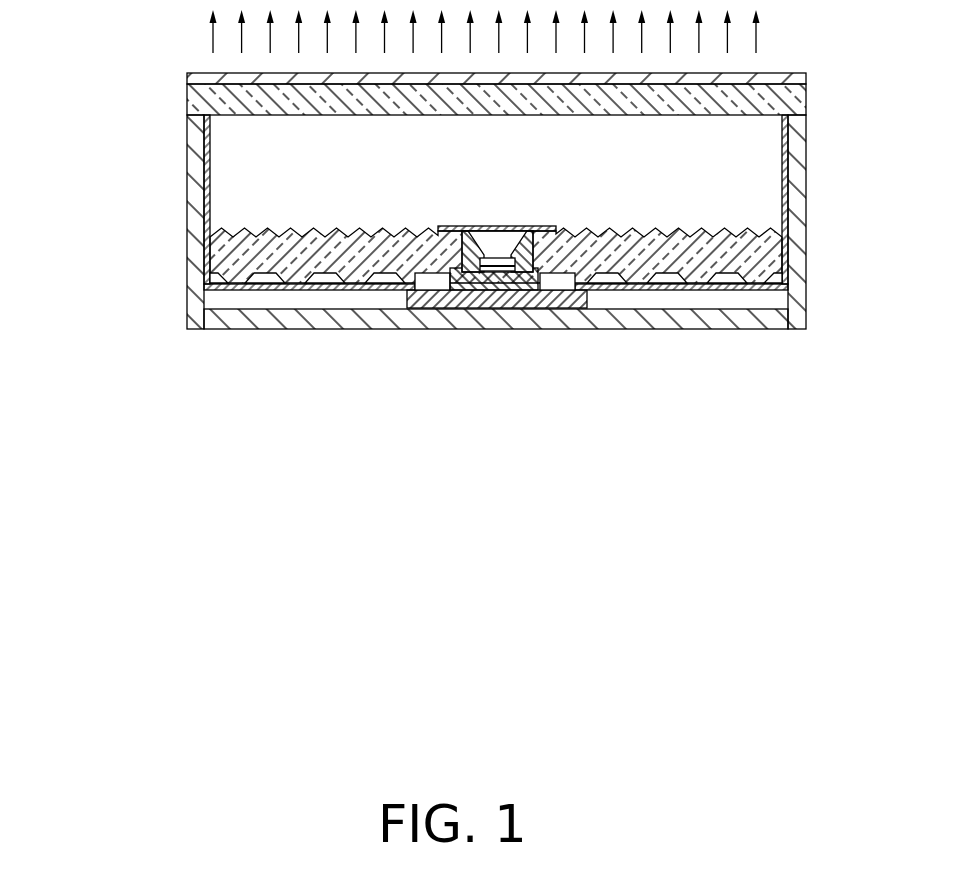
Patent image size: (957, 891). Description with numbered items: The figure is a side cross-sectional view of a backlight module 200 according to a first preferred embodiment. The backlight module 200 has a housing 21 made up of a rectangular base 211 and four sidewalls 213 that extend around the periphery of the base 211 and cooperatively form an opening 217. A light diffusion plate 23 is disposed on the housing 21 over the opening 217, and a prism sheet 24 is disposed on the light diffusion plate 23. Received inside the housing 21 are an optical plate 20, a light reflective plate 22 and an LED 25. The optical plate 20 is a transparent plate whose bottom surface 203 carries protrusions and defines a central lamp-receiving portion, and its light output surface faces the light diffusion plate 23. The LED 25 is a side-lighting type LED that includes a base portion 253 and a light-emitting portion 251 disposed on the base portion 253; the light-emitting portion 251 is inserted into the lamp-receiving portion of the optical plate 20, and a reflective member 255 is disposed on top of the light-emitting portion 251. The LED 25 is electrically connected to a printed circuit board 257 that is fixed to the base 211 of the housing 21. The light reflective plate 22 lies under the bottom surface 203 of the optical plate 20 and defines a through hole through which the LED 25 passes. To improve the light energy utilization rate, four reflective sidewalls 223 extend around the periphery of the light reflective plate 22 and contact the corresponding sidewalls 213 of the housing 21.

The backlight module 200 is at (163, 38).
The optical plate 20 is at (740, 263).
The bottom surface 203 is at (718, 288).
The housing 21 is at (436, 242).
The base 211 is at (235, 318).
The sidewalls 213 is at (198, 260).
The opening 217 is at (768, 153).
The light reflective plate 22 is at (772, 292).
The reflective sidewalls 223 is at (783, 185).
The light diffusion plate 23 is at (793, 102).
The prism sheet 24 is at (777, 83).
The LED 25 is at (476, 352).
The light-emitting portion 251 is at (441, 296).
The base portion 253 is at (507, 346).
The reflective member 255 is at (585, 285).
The printed circuit board 257 is at (426, 287).